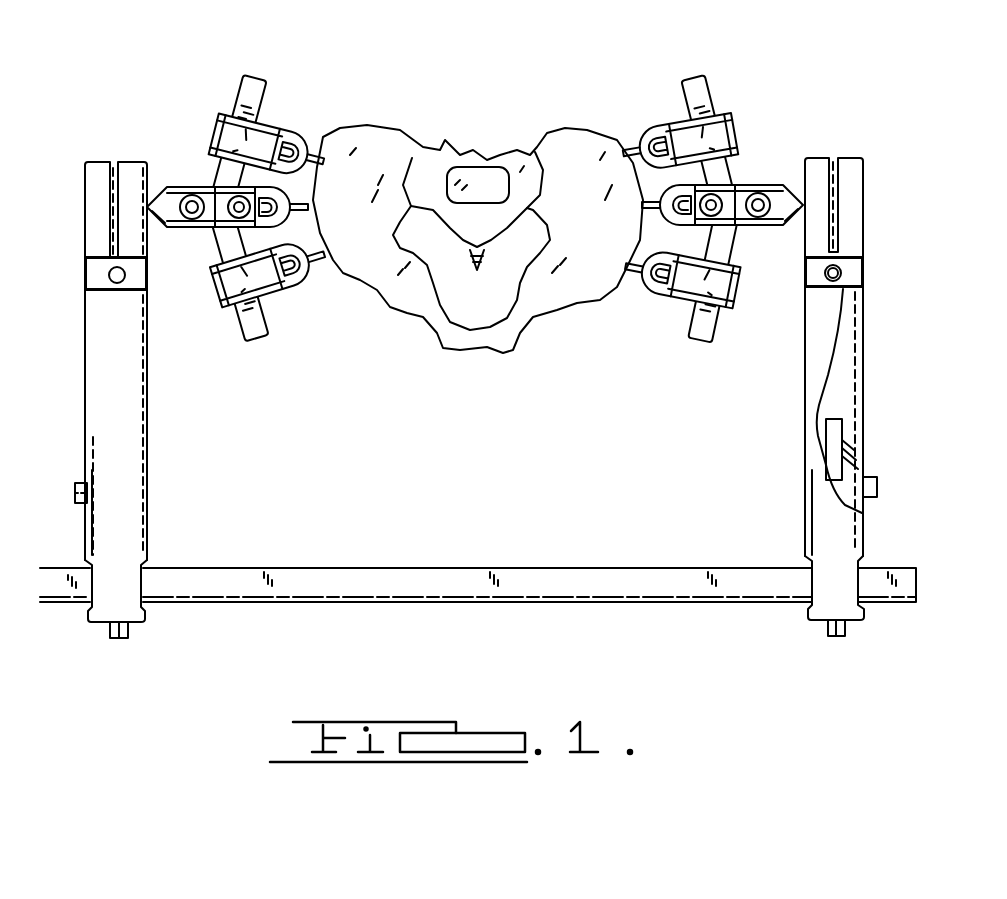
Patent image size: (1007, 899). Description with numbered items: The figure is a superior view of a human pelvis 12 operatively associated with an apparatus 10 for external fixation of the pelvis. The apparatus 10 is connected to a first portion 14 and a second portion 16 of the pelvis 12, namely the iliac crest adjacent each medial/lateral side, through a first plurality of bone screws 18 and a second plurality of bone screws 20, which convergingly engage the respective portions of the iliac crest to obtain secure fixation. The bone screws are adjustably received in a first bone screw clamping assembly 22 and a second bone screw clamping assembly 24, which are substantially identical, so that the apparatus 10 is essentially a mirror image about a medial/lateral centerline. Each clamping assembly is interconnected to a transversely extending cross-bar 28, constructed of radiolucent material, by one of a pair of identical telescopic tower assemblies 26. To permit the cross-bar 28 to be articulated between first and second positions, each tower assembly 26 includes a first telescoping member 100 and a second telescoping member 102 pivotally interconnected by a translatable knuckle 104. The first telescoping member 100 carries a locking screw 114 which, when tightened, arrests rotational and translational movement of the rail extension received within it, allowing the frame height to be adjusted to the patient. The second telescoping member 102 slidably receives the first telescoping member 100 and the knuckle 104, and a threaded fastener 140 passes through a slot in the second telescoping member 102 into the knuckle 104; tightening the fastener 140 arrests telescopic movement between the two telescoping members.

The apparatus 10 is at (830, 96).
The pelvis 12 is at (580, 126).
The first portion 14 is at (330, 140).
The second portion 16 is at (620, 286).
The first plurality of bone screws 18 is at (324, 288).
The second plurality of bone screws 20 is at (628, 128).
The first bone screw clamping assembly 22 is at (236, 101).
The second bone screw clamping assembly 24 is at (720, 88).
The telescopic tower assembly 26 is at (84, 359).
The cross-bar 28 is at (544, 600).
The first telescoping member 100 is at (88, 273).
The second telescoping member 102 is at (87, 423).
The translatable knuckle 104 is at (840, 478).
The locking screw 114 is at (830, 282).
The threaded fastener 140 is at (877, 481).